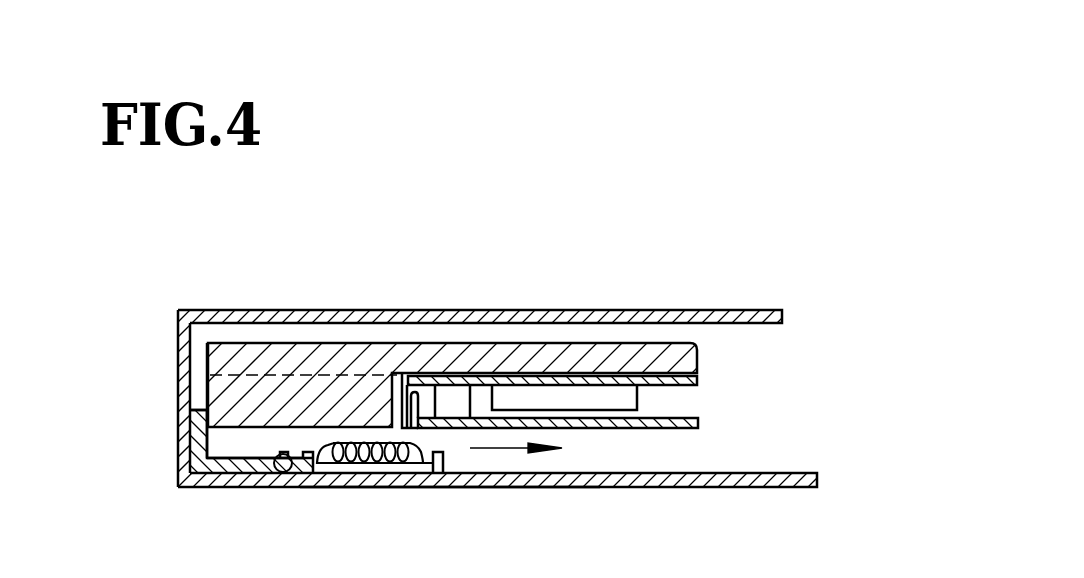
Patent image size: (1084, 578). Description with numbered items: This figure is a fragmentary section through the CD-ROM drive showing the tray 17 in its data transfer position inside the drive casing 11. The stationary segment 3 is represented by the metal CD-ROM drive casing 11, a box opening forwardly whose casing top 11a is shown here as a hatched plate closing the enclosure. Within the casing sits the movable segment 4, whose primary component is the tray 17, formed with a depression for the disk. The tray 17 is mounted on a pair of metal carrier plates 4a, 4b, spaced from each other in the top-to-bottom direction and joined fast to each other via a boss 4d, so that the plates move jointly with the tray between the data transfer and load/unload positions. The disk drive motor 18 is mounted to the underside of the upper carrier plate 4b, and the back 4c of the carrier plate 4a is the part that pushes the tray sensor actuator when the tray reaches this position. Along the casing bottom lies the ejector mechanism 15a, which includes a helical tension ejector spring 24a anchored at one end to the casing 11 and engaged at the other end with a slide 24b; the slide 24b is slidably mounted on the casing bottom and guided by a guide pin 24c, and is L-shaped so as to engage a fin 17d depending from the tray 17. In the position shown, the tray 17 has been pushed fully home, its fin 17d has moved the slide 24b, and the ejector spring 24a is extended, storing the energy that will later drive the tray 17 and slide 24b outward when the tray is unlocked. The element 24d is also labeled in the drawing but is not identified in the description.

The stationary segment 3 is at (512, 357).
The movable segment 4 is at (455, 364).
The carrier plate 4a is at (700, 423).
The upper carrier plate 4b is at (700, 381).
The back of the carrier plate 4c is at (408, 398).
The boss 4d is at (458, 400).
The CD-ROM drive casing 11 is at (813, 472).
The casing top 11a is at (323, 312).
The ejector mechanism 15a is at (422, 488).
The tray 17 is at (653, 345).
The fin 17d is at (207, 373).
The disk drive motor 18 is at (583, 398).
The ejector spring 24a is at (378, 455).
The slide 24b is at (227, 462).
The guide pin 24c is at (283, 472).
The L-shaped bracket 24d is at (178, 447).